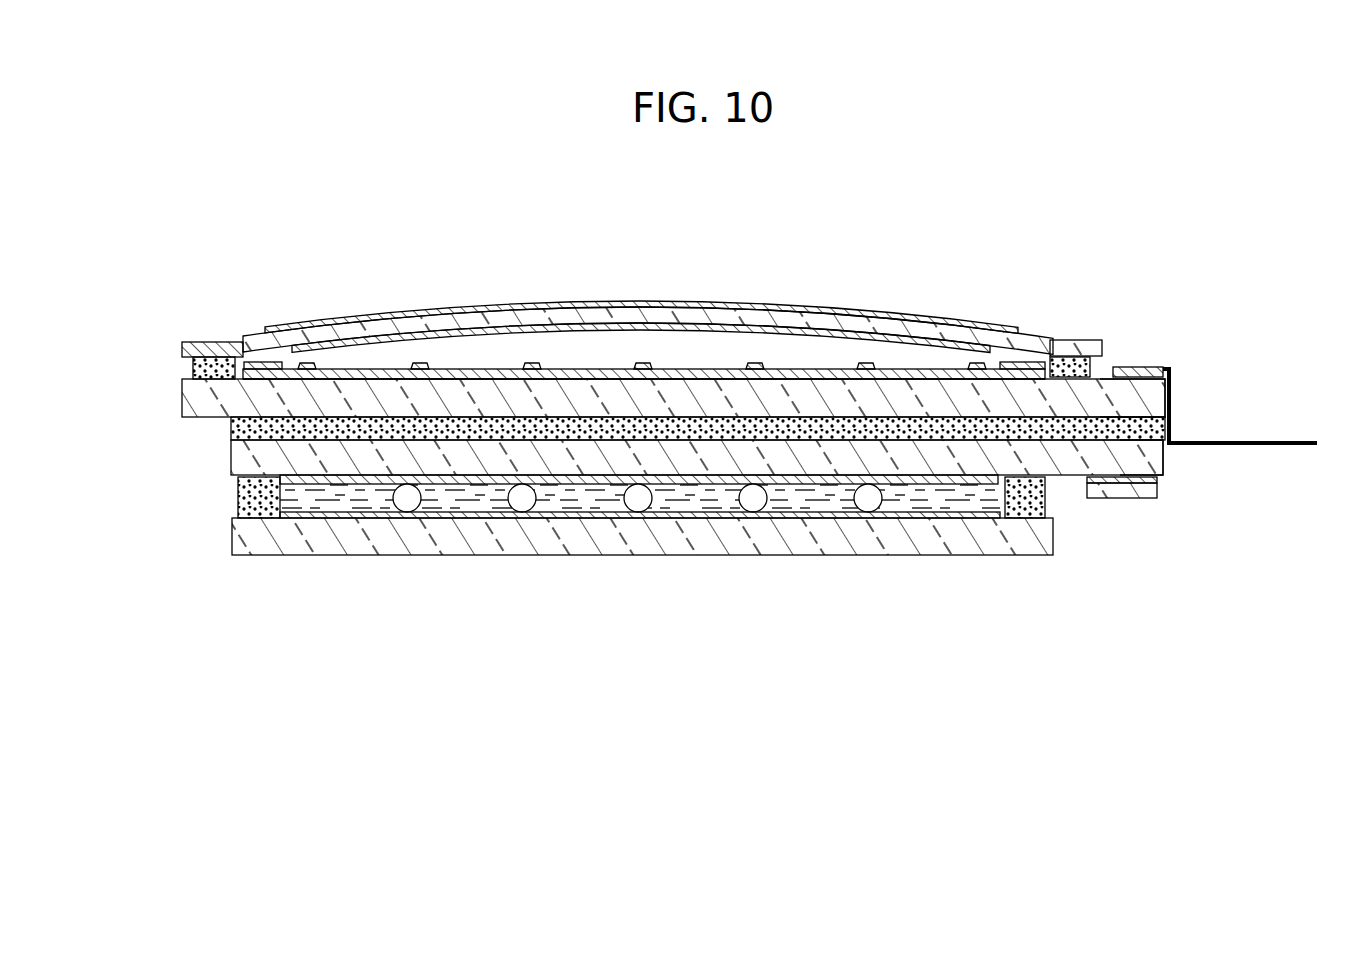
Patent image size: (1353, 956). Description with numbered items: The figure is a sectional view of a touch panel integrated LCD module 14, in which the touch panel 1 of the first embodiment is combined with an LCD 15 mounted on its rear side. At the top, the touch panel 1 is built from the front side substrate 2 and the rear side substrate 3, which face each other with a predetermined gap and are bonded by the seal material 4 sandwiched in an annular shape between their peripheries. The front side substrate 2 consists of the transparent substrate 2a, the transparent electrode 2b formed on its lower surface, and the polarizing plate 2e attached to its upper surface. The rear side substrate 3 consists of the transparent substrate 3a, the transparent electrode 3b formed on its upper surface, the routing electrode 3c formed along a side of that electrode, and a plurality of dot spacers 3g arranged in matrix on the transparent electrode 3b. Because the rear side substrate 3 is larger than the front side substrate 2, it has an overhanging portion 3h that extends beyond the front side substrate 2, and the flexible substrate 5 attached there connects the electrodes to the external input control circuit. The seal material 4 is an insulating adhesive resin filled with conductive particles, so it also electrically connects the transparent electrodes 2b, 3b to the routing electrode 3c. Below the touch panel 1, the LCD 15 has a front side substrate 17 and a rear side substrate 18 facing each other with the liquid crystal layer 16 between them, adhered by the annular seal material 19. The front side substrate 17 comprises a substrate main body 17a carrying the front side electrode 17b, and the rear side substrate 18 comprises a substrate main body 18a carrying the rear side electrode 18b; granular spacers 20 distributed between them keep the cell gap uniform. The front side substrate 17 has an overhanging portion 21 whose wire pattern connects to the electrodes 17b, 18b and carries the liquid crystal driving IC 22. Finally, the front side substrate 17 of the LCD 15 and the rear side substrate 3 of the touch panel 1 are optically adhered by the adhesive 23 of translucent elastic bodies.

The touch panel 1 is at (152, 398).
The front side substrate 2 is at (697, 300).
The transparent substrate 2a is at (583, 304).
The transparent electrode 2b is at (632, 310).
The polarizing plate 2e is at (763, 307).
The rear side substrate 3 is at (360, 392).
The transparent substrate 3a is at (393, 383).
The transparent electrode 3b is at (462, 370).
The routing electrode 3c is at (1157, 367).
The dot spacers 3g is at (305, 364).
The overhanging portion 3h is at (1127, 395).
The seal material 4 is at (213, 343).
The flexible substrate 5 is at (1253, 441).
The touch panel integrated LCD module 14 is at (78, 420).
The LCD 15 is at (118, 458).
The liquid crystal layer 16 is at (707, 500).
The front side substrate 17 is at (156, 442).
The substrate main body 17a is at (258, 459).
The front side electrode 17b is at (282, 479).
The rear side substrate 18 is at (156, 517).
The substrate main body 18a is at (297, 548).
The rear side electrode 18b is at (297, 522).
The seal material 19 is at (1027, 518).
The granular spacers 20 is at (405, 505).
The overhanging portion 21 is at (1153, 455).
The liquid crystal driving IC 22 is at (1122, 499).
The adhesive 23 is at (810, 432).